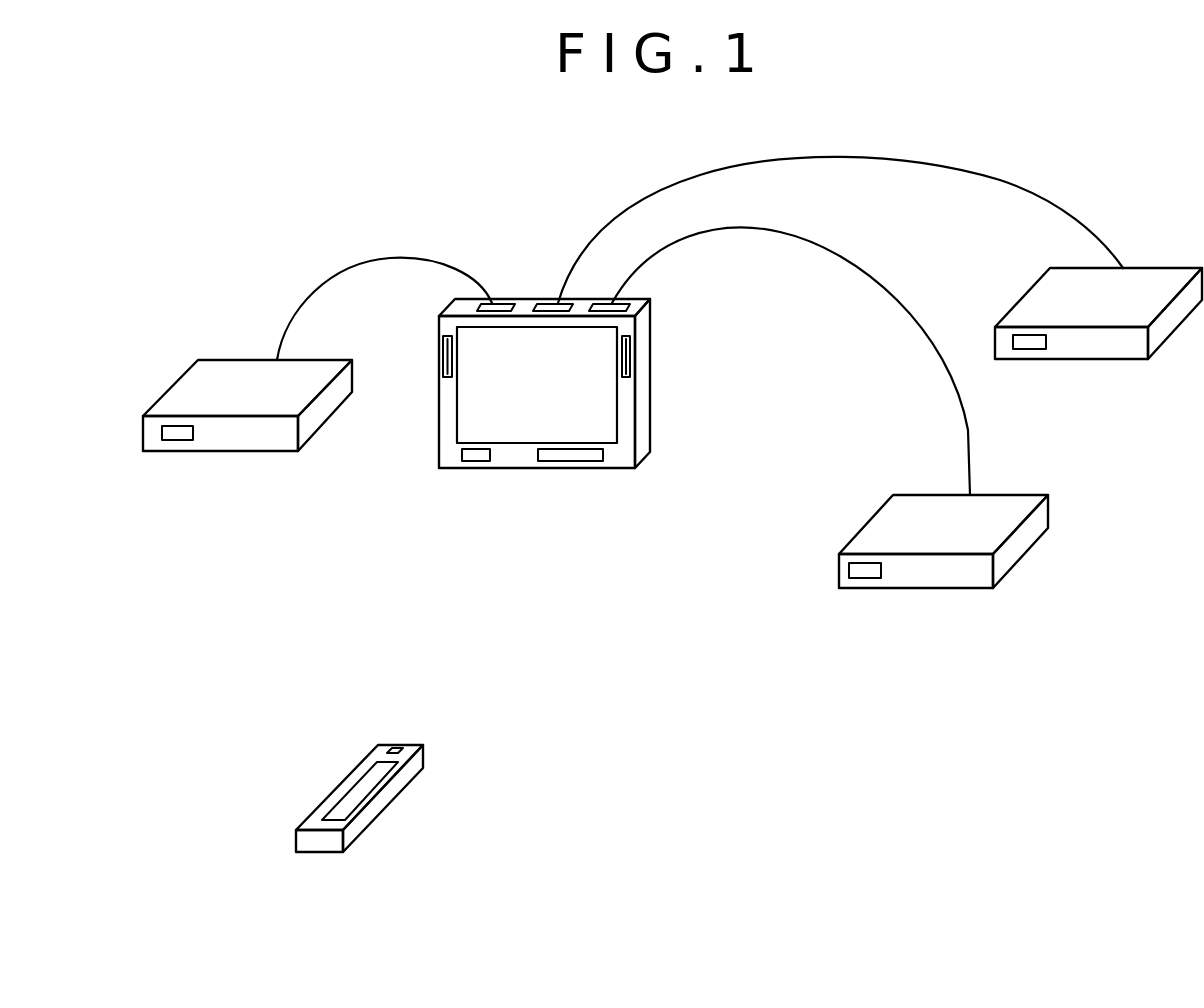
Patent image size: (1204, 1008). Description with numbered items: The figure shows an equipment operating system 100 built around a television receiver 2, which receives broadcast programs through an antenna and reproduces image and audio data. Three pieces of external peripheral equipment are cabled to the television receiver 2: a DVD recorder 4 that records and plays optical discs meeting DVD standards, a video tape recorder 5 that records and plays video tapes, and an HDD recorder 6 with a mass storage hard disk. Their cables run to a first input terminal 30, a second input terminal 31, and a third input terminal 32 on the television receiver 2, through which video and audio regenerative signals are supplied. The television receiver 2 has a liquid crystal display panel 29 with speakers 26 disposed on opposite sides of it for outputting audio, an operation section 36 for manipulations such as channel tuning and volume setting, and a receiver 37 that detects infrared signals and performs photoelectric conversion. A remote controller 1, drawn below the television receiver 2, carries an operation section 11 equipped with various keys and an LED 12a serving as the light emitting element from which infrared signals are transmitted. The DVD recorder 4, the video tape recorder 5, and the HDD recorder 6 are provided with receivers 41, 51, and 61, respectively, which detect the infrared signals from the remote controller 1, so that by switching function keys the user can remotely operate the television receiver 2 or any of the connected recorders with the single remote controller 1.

The equipment operating system 100 is at (468, 140).
The remote controller 1 is at (320, 853).
The operation section 11 is at (352, 797).
The LED 12a is at (397, 749).
The television receiver 2 is at (647, 457).
The speakers 26 is at (443, 357).
The liquid crystal display panel 29 is at (595, 402).
The first input terminal 30 is at (498, 303).
The second input terminal 31 is at (545, 303).
The third input terminal 32 is at (628, 301).
The operation section 36 is at (568, 458).
The receiver 37 is at (475, 458).
The DVD recorder 4 is at (252, 452).
The receiver 41 is at (175, 441).
The video tape recorder 5 is at (1104, 360).
The receiver 51 is at (1028, 350).
The HDD recorder 6 is at (942, 589).
The receiver 61 is at (865, 578).